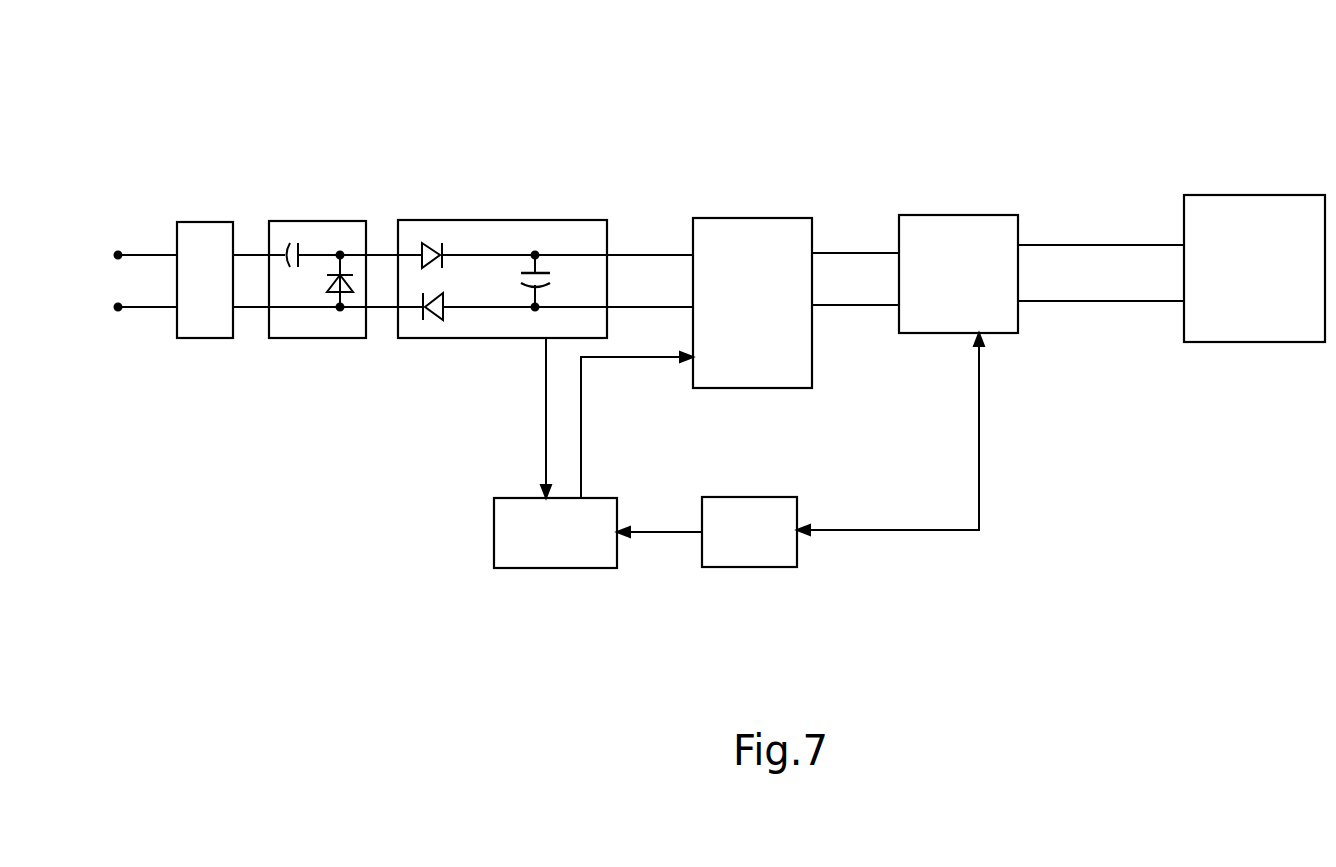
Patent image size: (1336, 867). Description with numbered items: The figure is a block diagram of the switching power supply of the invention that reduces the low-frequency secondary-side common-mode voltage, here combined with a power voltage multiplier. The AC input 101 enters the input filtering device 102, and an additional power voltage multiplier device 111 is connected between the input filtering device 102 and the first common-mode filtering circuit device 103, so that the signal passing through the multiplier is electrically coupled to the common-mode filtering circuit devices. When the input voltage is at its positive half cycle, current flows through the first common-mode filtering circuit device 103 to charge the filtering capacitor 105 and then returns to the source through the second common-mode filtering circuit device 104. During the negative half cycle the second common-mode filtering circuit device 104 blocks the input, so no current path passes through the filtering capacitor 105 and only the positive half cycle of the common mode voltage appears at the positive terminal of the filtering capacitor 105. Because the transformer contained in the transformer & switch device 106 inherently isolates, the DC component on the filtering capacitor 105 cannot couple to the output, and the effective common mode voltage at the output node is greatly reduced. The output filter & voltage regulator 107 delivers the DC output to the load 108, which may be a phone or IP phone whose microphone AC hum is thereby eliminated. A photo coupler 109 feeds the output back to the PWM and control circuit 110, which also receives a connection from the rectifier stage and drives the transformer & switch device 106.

The AC input 101 is at (88, 228).
The input filtering device 102 is at (210, 208).
The power voltage multiplier device 111 is at (330, 208).
The first common-mode filtering circuit device 103 is at (437, 216).
The second common-mode filtering circuit device 104 is at (455, 350).
The filtering capacitor 105 is at (560, 256).
The transformer & switch device 106 is at (760, 208).
The output filter & voltage regulator 107 is at (967, 205).
The load 108 is at (1252, 185).
The photo coupler 109 is at (760, 486).
The PWM and control circuit 110 is at (484, 533).